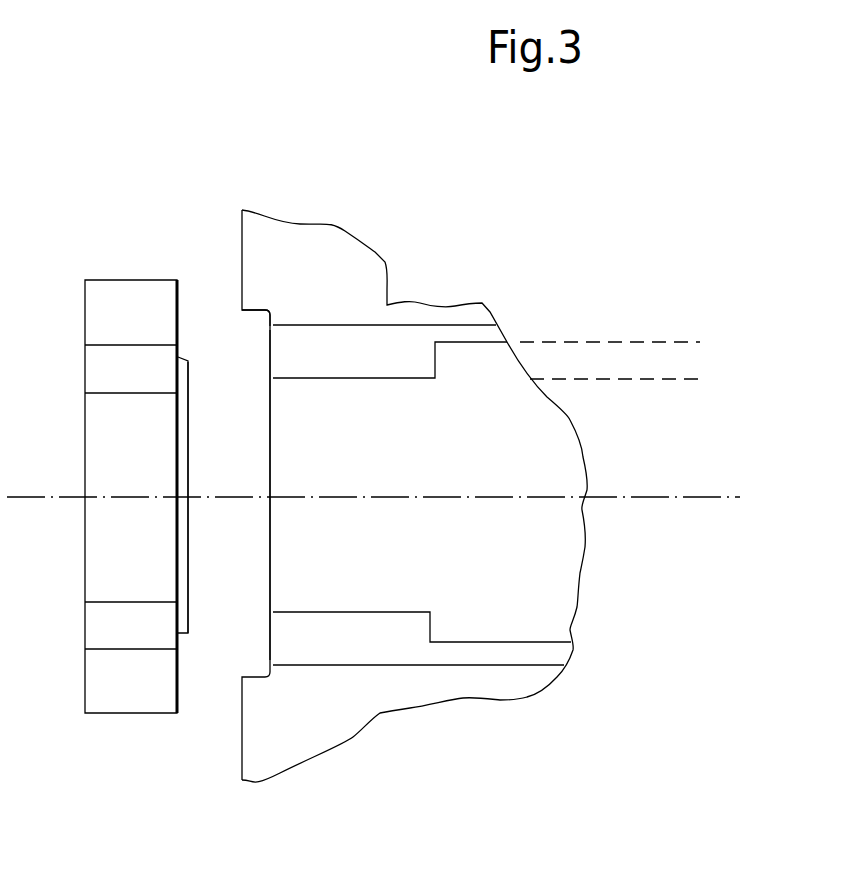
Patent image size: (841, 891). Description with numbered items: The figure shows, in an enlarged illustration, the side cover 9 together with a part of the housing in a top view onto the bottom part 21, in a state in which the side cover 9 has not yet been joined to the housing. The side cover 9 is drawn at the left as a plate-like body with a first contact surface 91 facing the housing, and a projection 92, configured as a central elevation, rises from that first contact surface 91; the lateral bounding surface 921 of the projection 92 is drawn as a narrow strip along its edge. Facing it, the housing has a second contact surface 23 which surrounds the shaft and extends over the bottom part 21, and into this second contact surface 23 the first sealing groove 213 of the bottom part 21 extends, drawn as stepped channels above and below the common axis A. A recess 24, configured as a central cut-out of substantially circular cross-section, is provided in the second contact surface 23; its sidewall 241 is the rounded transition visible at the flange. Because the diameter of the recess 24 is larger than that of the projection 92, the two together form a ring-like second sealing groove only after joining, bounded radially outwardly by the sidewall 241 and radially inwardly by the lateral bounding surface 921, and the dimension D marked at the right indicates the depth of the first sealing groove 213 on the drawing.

The side cover 9 is at (118, 279).
The first contact surface 91 is at (178, 675).
The projection 92 is at (188, 562).
The lateral bounding surface 921 is at (186, 357).
The bottom part 21 is at (375, 252).
The first sealing groove 213 is at (492, 335).
The second contact surface 23 is at (270, 419).
The recess 24 is at (252, 362).
The sidewall 241 is at (260, 310).
The axis A is at (677, 497).
The groove depth D is at (686, 302).